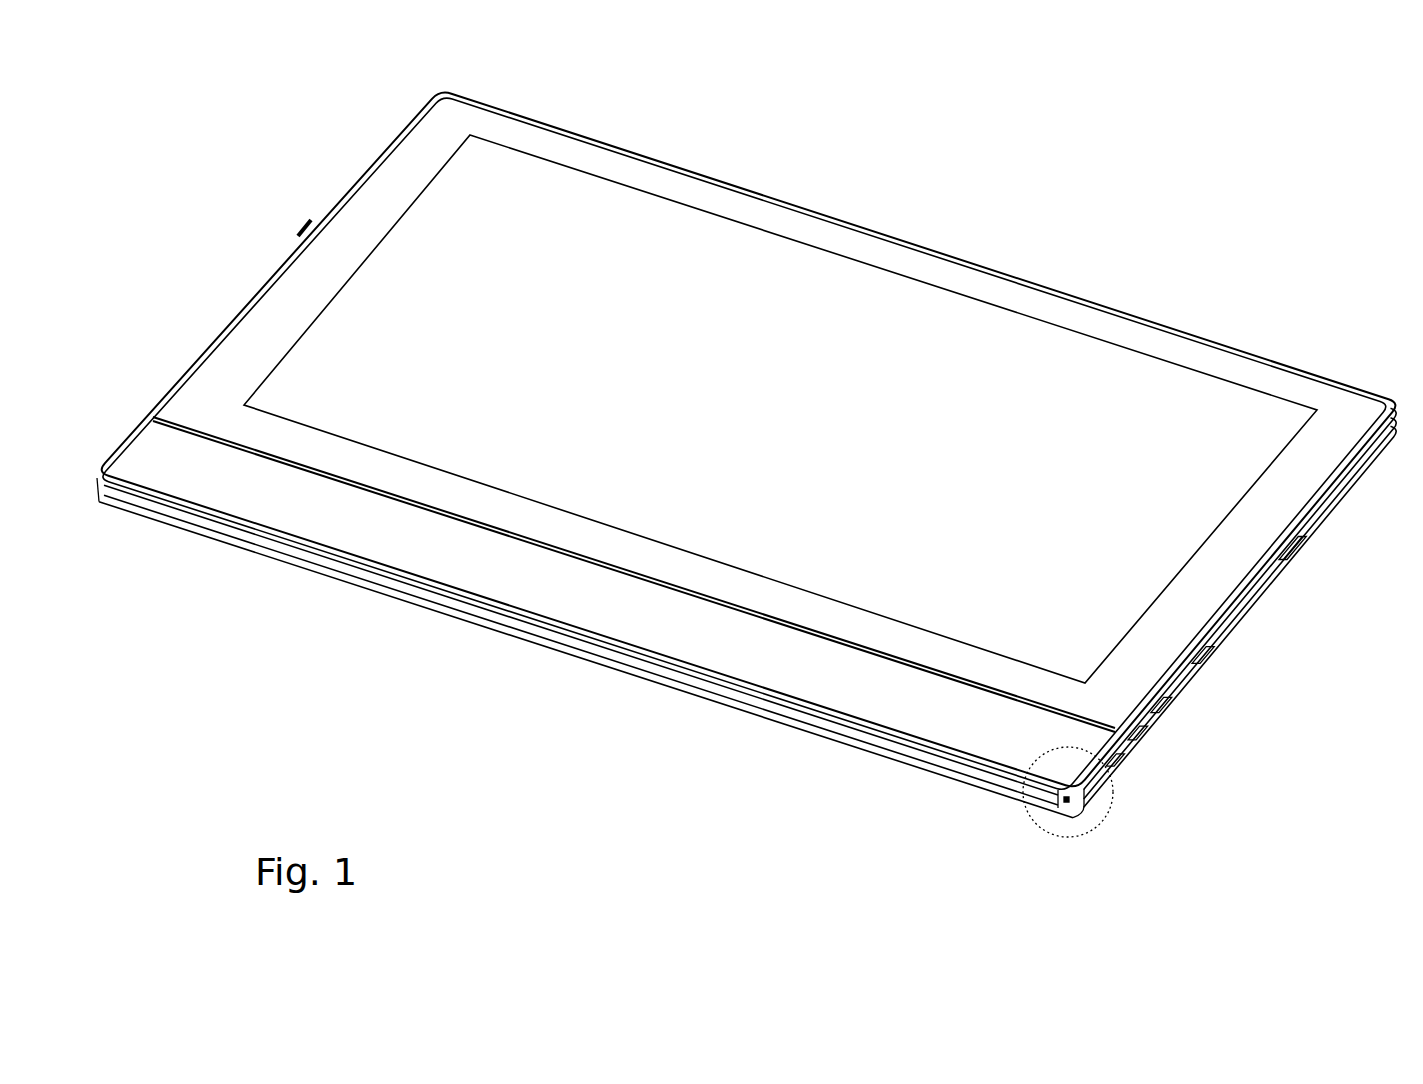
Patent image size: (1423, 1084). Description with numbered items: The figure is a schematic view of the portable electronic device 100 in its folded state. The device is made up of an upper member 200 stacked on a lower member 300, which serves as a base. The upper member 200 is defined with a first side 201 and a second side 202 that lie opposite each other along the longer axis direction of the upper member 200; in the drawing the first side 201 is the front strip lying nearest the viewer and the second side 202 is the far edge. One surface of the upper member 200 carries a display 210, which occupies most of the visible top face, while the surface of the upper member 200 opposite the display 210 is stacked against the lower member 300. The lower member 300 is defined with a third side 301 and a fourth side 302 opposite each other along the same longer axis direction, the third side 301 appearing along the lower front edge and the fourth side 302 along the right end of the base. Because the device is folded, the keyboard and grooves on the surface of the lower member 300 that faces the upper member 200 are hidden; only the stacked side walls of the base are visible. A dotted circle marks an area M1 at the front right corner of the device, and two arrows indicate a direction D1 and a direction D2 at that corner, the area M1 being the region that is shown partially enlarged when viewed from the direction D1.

The portable electronic device 100 is at (1245, 212).
The upper member 200 is at (371, 158).
The first side 201 is at (253, 497).
The second side 202 is at (591, 160).
The display 210 is at (392, 273).
The lower member 300 is at (806, 733).
The third side 301 is at (490, 632).
The fourth side 302 is at (1358, 387).
The area M1 is at (1097, 833).
The direction D1 is at (1042, 850).
The direction D2 is at (1143, 799).